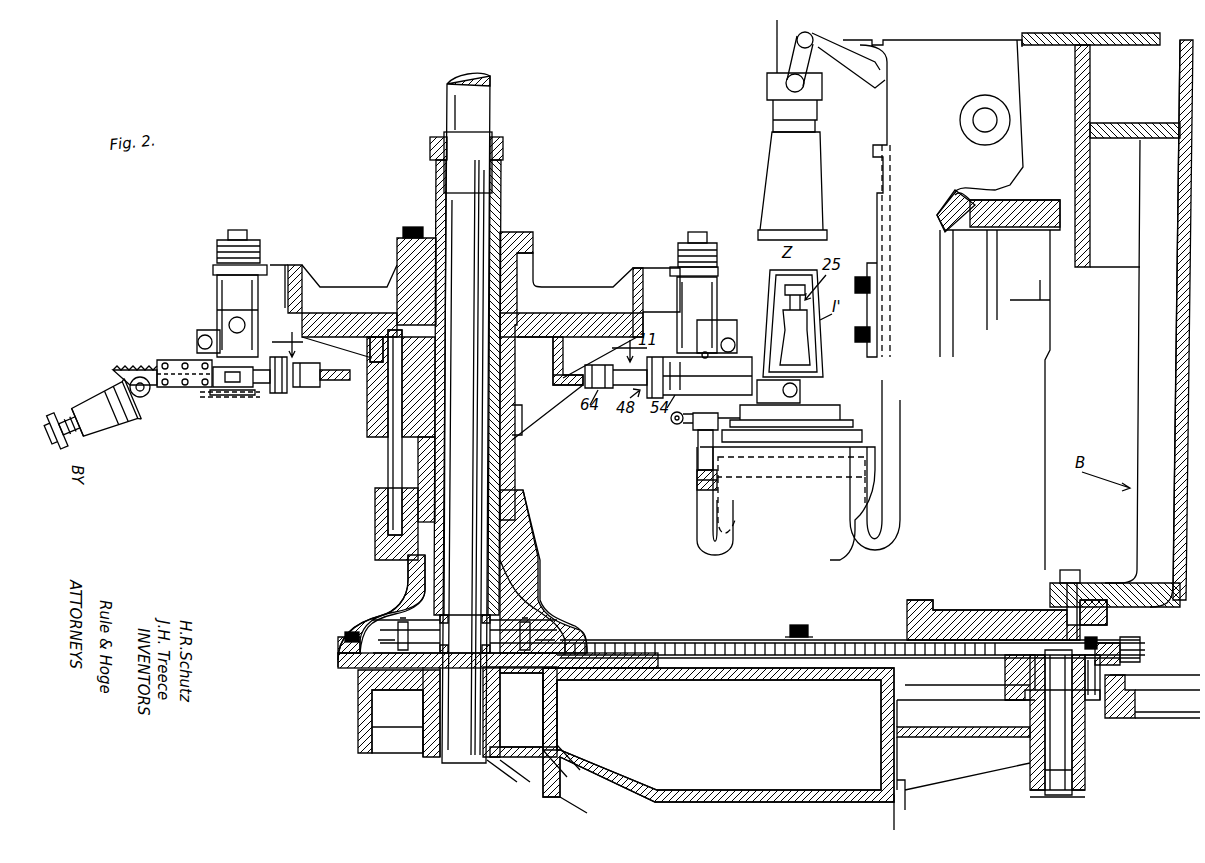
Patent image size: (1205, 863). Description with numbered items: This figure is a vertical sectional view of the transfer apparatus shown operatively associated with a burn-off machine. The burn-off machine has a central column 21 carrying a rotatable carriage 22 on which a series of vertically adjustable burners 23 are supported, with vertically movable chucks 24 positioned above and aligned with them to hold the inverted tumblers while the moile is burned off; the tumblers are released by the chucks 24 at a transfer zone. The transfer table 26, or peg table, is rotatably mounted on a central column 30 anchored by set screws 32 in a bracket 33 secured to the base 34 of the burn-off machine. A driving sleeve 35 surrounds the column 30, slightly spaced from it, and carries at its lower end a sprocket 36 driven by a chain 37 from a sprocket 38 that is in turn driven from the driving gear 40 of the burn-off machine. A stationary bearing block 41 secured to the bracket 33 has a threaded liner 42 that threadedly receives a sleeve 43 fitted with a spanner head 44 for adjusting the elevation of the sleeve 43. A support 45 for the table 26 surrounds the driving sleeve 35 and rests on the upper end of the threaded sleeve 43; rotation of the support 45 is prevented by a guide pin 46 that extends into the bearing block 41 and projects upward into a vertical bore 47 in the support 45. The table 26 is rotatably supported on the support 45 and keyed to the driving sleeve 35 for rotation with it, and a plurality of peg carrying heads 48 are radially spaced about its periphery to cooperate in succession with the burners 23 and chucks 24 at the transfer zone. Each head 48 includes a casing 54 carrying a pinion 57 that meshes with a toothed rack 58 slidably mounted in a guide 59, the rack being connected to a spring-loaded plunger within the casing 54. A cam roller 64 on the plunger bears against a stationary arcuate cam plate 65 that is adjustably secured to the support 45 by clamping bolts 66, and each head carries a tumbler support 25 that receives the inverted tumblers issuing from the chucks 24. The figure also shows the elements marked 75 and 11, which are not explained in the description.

The central column 30 is at (487, 78).
The driving sleeve 35 is at (500, 207).
The transfer table 26 is at (338, 295).
The hydraulic cylinder 75 is at (250, 252).
The workpiece axis 11 is at (286, 337).
The clamping bolts 66 is at (332, 370).
The tumbler support 25 is at (68, 391).
The toothed rack 58 is at (132, 368).
The guide 59 is at (175, 360).
The pinion 57 is at (143, 397).
The peg carrying heads 48 is at (222, 400).
The casing 54 is at (240, 392).
The cam roller 64 is at (285, 395).
The arcuate cam plate 65 is at (320, 388).
The vertical bore 47 is at (393, 405).
The support 45 is at (395, 428).
The guide pin 46 is at (400, 467).
The threaded liner 42 is at (383, 496).
The stationary bearing block 41 is at (385, 562).
The spanner head 44 is at (513, 447).
The sleeve 43 is at (497, 527).
The sprocket 36 is at (518, 682).
The set screws 32 is at (425, 735).
The chain 37 is at (663, 645).
The bracket 33 is at (840, 800).
The base 34 is at (975, 593).
The sprocket 38 is at (1118, 645).
The driving gear 40 is at (1125, 715).
The central column 21 is at (1175, 385).
The rotatable carriage 22 is at (951, 305).
The chucks 24 is at (815, 192).
The burners 23 is at (818, 410).